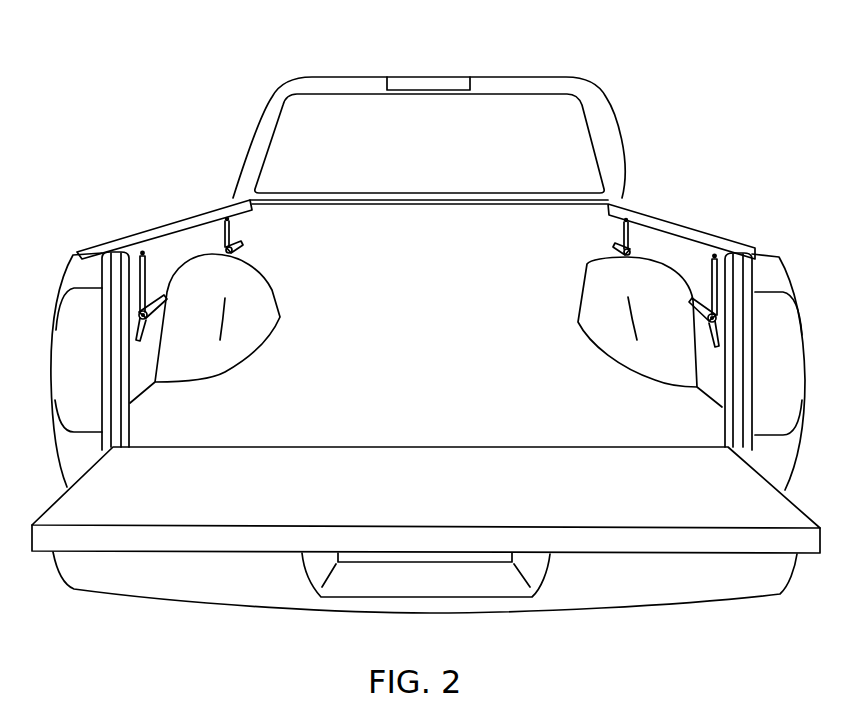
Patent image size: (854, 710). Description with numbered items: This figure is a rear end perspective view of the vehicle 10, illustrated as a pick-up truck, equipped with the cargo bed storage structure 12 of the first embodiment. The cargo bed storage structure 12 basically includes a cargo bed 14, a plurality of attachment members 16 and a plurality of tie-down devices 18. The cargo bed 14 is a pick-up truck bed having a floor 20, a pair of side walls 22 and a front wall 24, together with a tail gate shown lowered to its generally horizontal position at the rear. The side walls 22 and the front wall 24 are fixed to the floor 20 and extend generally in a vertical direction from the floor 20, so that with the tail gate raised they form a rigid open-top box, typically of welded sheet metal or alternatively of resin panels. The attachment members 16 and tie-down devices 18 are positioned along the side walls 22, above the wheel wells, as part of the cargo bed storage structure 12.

The vehicle 10 is at (616, 56).
The cargo bed storage structure 12 is at (437, 278).
The cargo bed 14 is at (738, 240).
The attachment members 16 is at (145, 254).
The tie-down devices 18 is at (149, 333).
The floor 20 is at (540, 408).
The side walls 22 is at (113, 241).
The front wall 24 is at (468, 240).